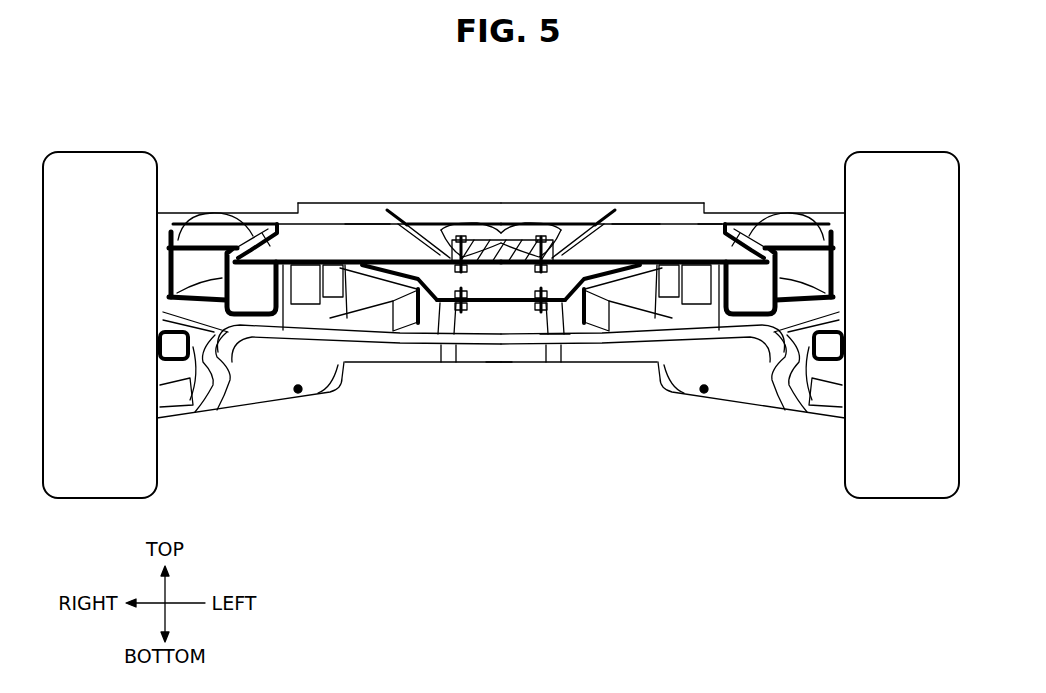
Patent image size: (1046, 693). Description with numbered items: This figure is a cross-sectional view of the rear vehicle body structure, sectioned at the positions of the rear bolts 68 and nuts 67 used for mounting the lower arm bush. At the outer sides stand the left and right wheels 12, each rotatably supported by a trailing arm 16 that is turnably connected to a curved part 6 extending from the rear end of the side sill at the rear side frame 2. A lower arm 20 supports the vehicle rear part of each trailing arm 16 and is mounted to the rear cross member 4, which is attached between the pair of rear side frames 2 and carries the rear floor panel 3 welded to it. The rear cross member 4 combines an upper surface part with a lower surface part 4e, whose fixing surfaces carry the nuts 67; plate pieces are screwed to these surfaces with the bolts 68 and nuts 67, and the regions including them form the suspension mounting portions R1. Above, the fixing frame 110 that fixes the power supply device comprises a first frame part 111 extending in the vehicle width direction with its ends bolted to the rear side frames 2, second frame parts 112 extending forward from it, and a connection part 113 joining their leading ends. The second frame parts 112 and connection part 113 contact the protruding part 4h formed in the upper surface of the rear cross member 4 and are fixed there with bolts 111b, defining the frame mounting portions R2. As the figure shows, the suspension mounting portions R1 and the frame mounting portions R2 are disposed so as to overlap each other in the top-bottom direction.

The wheel 12 is at (100, 152).
The curved part 6 is at (197, 262).
The rear side frame 2 is at (255, 262).
The rear cross member 4 is at (676, 232).
The protruding part 4h is at (708, 228).
The lower surface part 4e is at (495, 330).
The fixing frame 110 is at (557, 204).
The first frame part 111 is at (453, 235).
The bolt 111b is at (461, 237).
The second frame part 112 is at (414, 225).
The connection part 113 is at (499, 240).
The frame mounting portion R2 is at (366, 250).
The suspension mounting portion R1 is at (556, 336).
The rear floor panel 3 is at (447, 362).
The nut 67 is at (437, 350).
The bolt 68 is at (468, 345).
The lower arm 20 is at (386, 358).
The trailing arm 16 is at (208, 398).